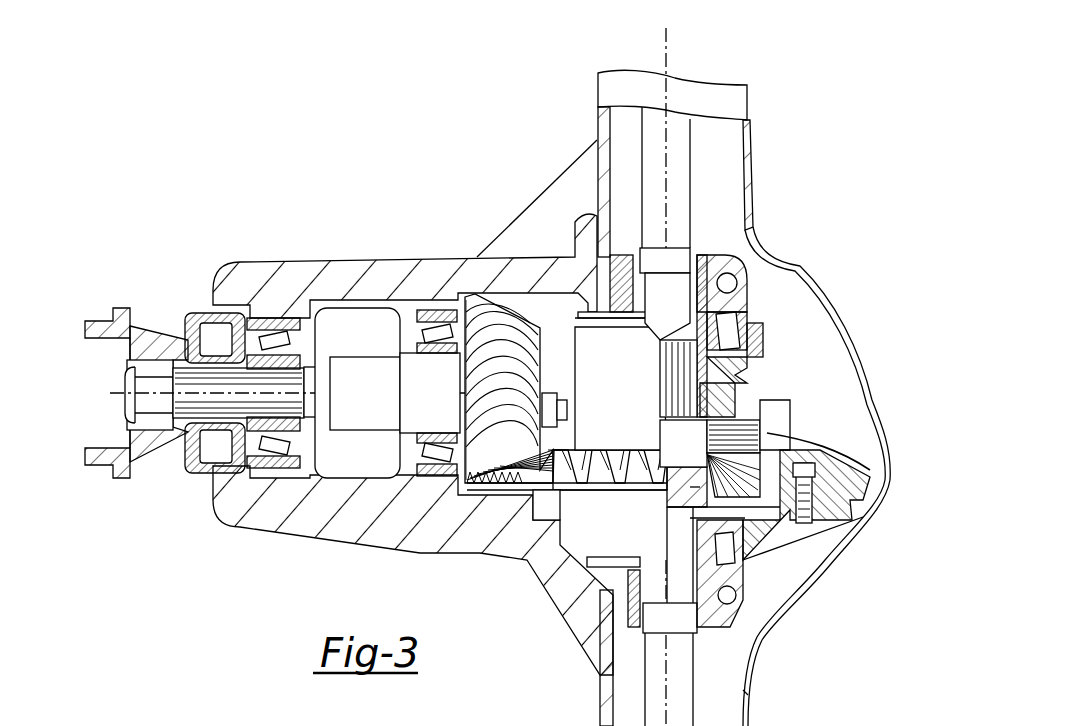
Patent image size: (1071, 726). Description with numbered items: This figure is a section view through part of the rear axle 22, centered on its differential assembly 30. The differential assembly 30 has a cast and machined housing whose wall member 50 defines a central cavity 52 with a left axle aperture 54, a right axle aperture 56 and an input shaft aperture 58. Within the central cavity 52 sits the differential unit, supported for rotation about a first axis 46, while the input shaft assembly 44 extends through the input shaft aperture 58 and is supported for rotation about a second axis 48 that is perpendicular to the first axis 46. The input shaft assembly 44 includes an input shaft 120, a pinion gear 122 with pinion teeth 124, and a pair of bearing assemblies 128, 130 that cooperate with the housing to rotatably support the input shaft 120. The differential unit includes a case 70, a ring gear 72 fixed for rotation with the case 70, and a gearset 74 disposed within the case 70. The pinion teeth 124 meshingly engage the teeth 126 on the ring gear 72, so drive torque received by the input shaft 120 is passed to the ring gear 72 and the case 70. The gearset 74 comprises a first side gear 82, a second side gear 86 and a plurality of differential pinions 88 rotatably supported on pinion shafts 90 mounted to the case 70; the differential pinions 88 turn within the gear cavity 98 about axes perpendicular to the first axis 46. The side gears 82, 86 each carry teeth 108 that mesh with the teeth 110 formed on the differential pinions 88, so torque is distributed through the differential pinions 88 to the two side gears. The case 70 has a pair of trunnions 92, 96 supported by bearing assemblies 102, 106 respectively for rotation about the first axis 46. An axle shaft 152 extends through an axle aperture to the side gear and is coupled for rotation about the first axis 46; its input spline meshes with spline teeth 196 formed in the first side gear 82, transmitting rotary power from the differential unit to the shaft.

The rear axle 22 is at (88, 355).
The differential assembly 30 is at (808, 212).
The input shaft assembly 44 is at (320, 410).
The first axis 46 is at (672, 70).
The second axis 48 is at (340, 397).
The wall member 50 is at (475, 267).
The central cavity 52 is at (852, 440).
The left axle aperture 54 is at (723, 653).
The right axle aperture 56 is at (728, 210).
The input shaft aperture 58 is at (333, 317).
The case 70 is at (646, 338).
The ring gear 72 is at (557, 483).
The gearset 74 is at (873, 404).
The first side gear 82 is at (692, 487).
The second side gear 86 is at (718, 385).
The differential pinions 88 is at (803, 421).
The pinion shafts 90 is at (870, 470).
The trunnion 92 is at (755, 545).
The trunnion 96 is at (755, 325).
The gear cavity 98 is at (677, 435).
The bearing assembly 102 is at (725, 558).
The bearing assembly 106 is at (783, 258).
The teeth 108 is at (692, 483).
The teeth 110 is at (767, 538).
The input shaft 120 is at (425, 370).
The pinion gear 122 is at (540, 337).
The pinion teeth 124 is at (527, 350).
The teeth 126 is at (583, 447).
The bearing assembly 128 is at (420, 340).
The bearing assembly 130 is at (290, 317).
The axle shaft 152 is at (683, 142).
The spline teeth 196 is at (745, 405).